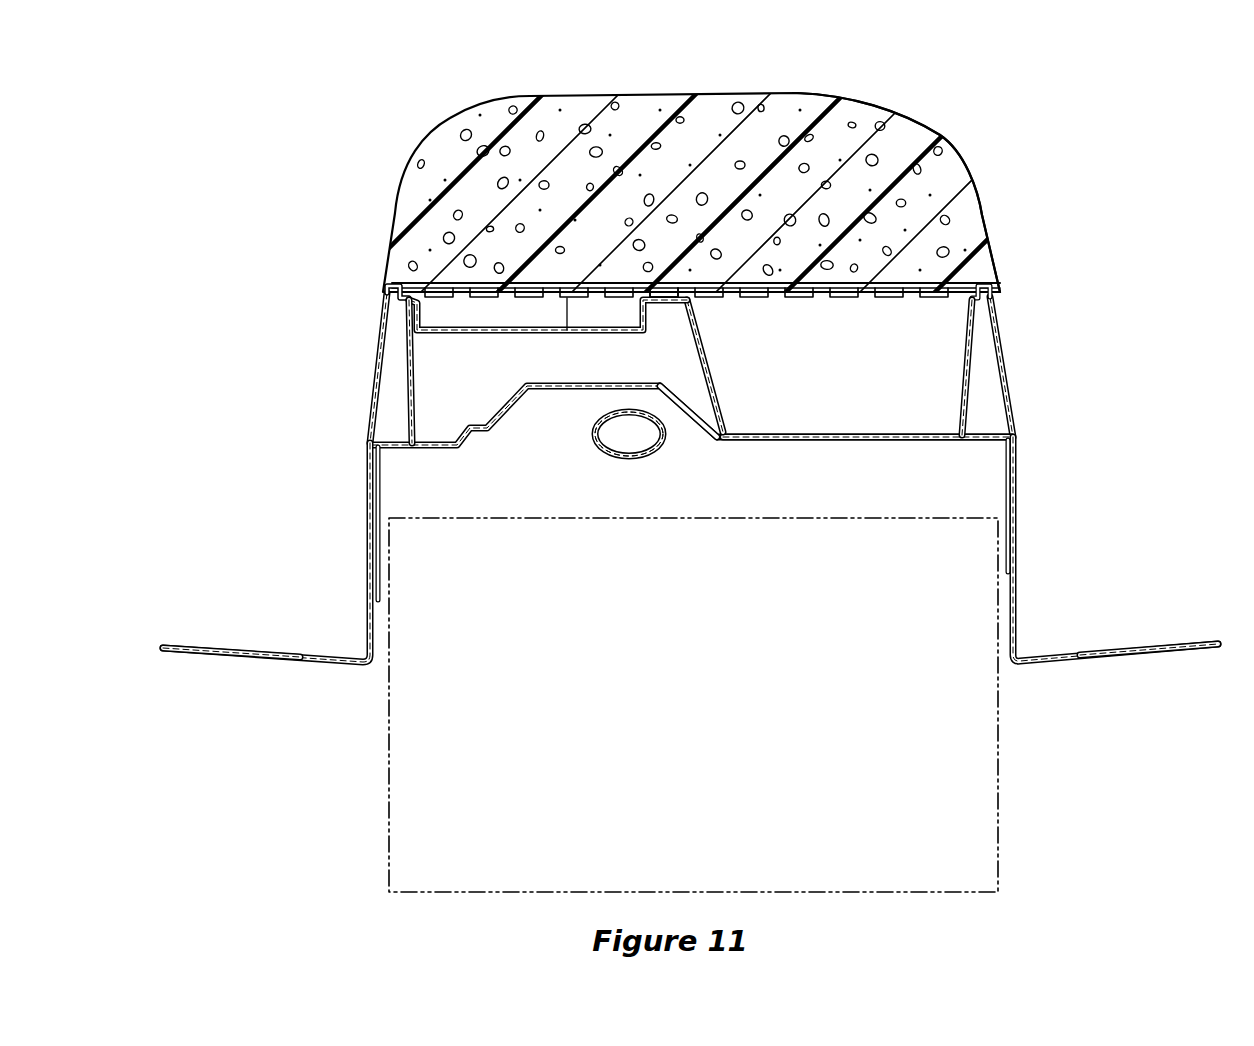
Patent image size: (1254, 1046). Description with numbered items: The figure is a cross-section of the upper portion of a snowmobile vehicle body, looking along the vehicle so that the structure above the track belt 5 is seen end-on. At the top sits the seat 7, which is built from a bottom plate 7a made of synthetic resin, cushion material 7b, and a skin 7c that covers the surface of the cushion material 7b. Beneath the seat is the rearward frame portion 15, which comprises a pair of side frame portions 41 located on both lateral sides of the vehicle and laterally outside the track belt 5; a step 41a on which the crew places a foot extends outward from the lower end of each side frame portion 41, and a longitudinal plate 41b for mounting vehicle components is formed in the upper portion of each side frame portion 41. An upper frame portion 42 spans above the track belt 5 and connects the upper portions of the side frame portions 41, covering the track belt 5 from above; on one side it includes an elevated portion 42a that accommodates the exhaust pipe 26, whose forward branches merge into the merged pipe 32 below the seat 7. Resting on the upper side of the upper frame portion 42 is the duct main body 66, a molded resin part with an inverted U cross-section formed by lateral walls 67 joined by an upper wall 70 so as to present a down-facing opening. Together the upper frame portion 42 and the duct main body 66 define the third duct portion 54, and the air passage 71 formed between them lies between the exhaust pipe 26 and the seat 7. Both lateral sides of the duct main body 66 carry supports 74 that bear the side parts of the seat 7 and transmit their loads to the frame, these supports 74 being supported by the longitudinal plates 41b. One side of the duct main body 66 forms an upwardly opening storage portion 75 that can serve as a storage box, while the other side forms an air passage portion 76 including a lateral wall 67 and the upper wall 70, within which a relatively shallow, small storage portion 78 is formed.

The track belt 5 is at (388, 730).
The seat 7 is at (915, 120).
The bottom plate 7a is at (903, 283).
The cushion material 7b is at (977, 186).
The skin 7c is at (952, 140).
The rearward frame portion 15 is at (368, 519).
The exhaust pipe 26 is at (635, 459).
The merged pipe 32 is at (657, 506).
The side frame portion 41 is at (365, 612).
The step 41a is at (225, 650).
The longitudinal plate 41b is at (407, 362).
The upper frame portion 42 is at (437, 440).
The elevated portion 42a is at (647, 383).
The third duct portion 54 is at (384, 324).
The duct main body 66 is at (382, 352).
The lateral wall 67 is at (1000, 333).
The upper wall 70 is at (657, 298).
The air passage 71 is at (464, 372).
The support 74 is at (415, 283).
The storage portion 75 is at (907, 388).
The air passage portion 76 is at (718, 388).
The storage portion 78 is at (567, 282).